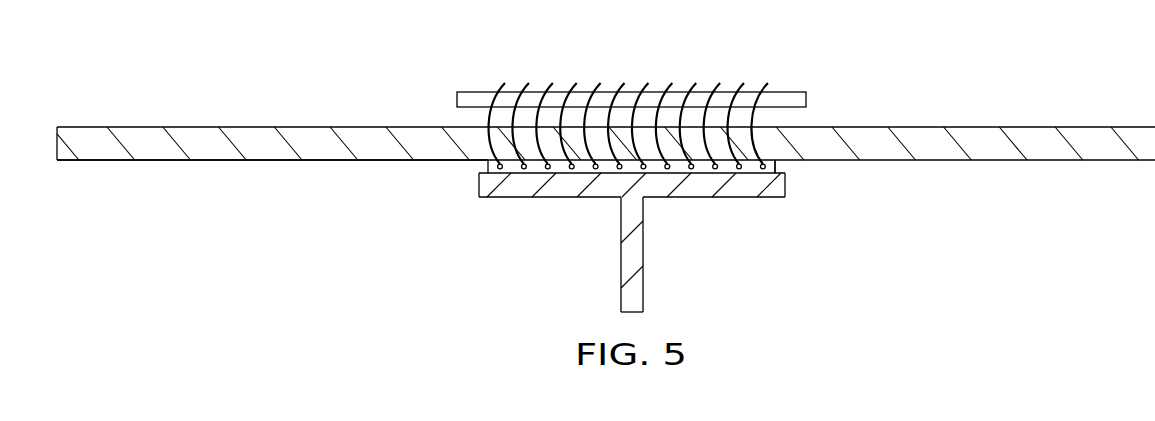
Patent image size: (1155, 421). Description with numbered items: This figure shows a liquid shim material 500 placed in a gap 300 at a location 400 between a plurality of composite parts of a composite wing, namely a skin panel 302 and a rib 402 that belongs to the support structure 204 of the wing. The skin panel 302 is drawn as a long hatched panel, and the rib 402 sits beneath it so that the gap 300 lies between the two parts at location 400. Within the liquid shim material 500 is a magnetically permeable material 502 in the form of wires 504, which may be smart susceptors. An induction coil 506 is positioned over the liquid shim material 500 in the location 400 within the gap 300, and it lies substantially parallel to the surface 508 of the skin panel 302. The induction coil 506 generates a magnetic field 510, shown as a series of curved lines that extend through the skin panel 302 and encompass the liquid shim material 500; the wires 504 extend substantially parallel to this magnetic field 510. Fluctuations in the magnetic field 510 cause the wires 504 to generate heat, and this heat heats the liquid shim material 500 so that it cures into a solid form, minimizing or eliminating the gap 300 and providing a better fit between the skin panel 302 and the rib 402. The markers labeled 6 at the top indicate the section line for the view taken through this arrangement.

The section line 6-6 indicator 6 is at (631, 26).
The support structure 204 is at (631, 254).
The gap 300 is at (591, 241).
The skin panel 302 is at (606, 117).
The location 400 is at (455, 170).
The rib 402 is at (620, 272).
The liquid shim material 500 is at (728, 172).
The magnetically permeable material 502 is at (535, 180).
The wires 504 is at (512, 173).
The induction coil 506 is at (807, 100).
The surface 508 is at (246, 126).
The magnetic field 510 is at (488, 118).